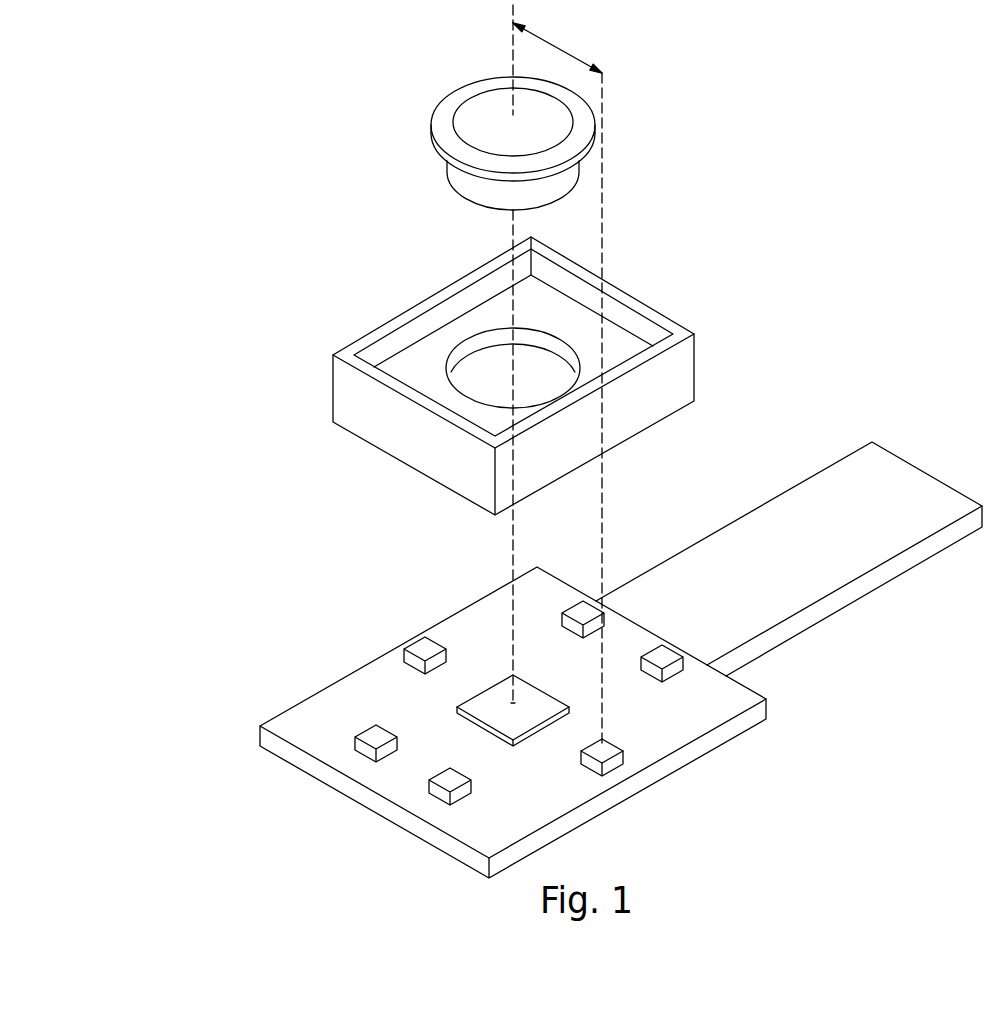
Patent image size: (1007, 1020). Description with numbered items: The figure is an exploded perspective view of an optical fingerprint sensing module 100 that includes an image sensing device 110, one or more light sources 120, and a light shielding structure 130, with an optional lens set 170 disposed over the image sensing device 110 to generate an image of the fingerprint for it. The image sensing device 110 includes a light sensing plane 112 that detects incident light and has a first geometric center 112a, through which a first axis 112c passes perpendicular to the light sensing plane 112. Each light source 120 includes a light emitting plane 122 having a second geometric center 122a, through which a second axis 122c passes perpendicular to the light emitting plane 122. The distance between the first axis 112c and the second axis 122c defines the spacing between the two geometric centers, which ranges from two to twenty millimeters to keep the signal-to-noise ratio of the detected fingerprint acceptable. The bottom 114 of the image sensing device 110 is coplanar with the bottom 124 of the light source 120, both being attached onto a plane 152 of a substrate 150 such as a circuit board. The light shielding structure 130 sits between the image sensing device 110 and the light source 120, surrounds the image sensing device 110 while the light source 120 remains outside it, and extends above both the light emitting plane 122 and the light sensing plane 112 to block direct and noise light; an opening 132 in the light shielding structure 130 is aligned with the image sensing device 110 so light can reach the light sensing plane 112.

The optical fingerprint sensing module 100 is at (168, 59).
The lens set 170 is at (441, 118).
The first axis 112c is at (512, 38).
The second axis 122c is at (604, 95).
The light shielding structure 130 is at (528, 364).
The opening 132 is at (550, 290).
The substrate 150 is at (621, 660).
The plane 152 is at (727, 705).
The image sensing device 110 is at (450, 694).
The light sensing plane 112 is at (514, 636).
The first geometric center 112a is at (515, 703).
The bottom of the image sensing device 114 is at (477, 722).
The light source 120 is at (497, 733).
The light emitting plane 122 is at (377, 727).
The second geometric center 122a is at (604, 743).
The bottom of the light source 124 is at (594, 765).